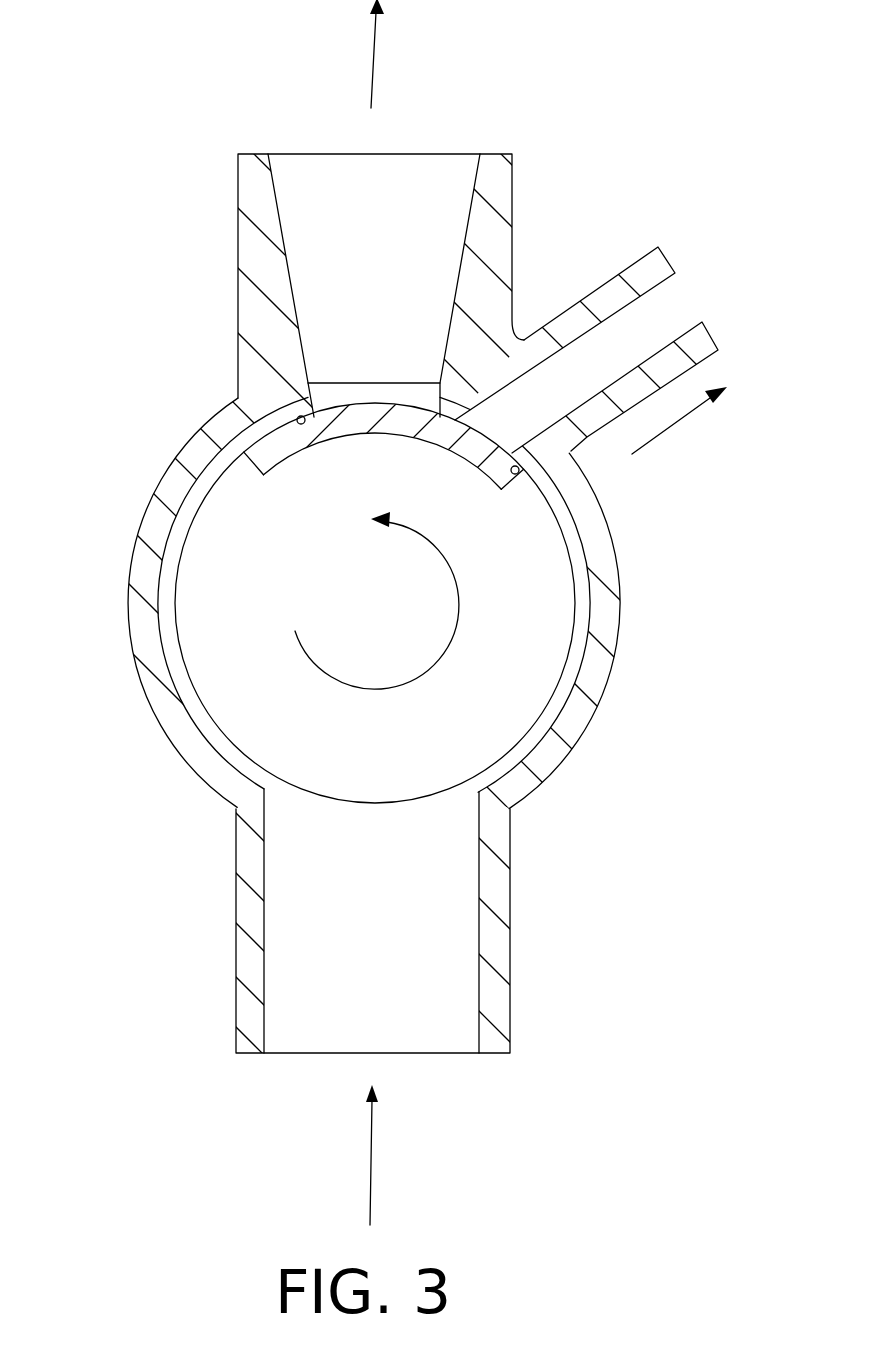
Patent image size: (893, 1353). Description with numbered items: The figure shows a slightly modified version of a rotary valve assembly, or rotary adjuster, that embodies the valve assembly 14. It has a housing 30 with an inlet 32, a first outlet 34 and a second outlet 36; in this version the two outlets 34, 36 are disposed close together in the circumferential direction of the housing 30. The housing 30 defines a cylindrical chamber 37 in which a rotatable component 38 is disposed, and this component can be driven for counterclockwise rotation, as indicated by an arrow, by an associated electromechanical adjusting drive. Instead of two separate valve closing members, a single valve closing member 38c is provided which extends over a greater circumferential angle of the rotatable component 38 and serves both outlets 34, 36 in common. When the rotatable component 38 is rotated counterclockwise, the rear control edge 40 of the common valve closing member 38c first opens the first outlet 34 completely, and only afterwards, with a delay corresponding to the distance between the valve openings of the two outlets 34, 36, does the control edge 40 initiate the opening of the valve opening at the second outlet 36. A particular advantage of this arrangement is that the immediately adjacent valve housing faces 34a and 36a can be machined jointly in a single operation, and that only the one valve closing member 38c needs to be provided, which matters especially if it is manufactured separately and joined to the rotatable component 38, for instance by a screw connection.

The valve assembly 14 is at (122, 741).
The housing 30 is at (612, 706).
The inlet 32 is at (264, 1017).
The first outlet 34 is at (692, 327).
The valve housing face 34a is at (519, 473).
The second outlet 36 is at (473, 178).
The valve housing face 36a is at (298, 416).
The cylindrical chamber 37 is at (505, 768).
The rotatable component 38 is at (348, 816).
The valve closing member 38c is at (437, 434).
The rear control edge 40 is at (517, 496).